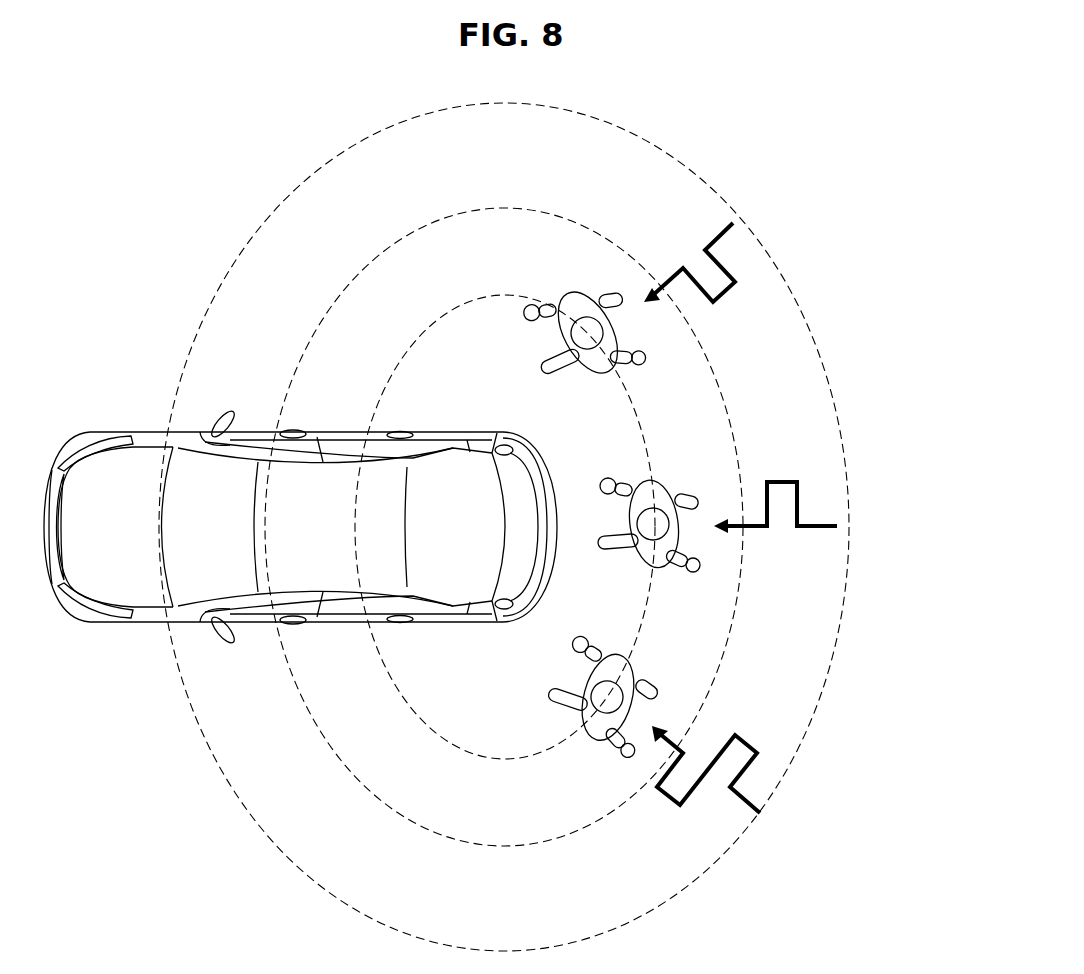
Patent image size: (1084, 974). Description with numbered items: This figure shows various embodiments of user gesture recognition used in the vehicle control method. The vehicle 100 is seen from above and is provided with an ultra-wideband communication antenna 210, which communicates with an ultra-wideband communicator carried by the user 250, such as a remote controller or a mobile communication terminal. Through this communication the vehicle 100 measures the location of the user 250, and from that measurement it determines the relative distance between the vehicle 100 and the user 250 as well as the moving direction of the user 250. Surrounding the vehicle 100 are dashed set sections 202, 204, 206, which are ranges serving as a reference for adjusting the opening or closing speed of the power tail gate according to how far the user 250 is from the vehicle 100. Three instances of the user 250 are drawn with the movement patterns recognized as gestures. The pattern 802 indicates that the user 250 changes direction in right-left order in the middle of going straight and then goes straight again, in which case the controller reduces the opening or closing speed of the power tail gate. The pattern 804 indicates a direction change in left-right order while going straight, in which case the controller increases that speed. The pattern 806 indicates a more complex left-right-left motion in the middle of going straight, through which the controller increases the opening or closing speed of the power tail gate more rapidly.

The vehicle 100 is at (147, 621).
The set section 202 is at (412, 347).
The set section 204 is at (307, 347).
The set section 206 is at (232, 264).
The ultra-wideband communication antenna 210 is at (503, 445).
The user 250 is at (596, 300).
The right-left direction change gesture 802 is at (812, 528).
The left-right direction change gesture 804 is at (733, 238).
The left-right-left direction change gesture 806 is at (730, 813).